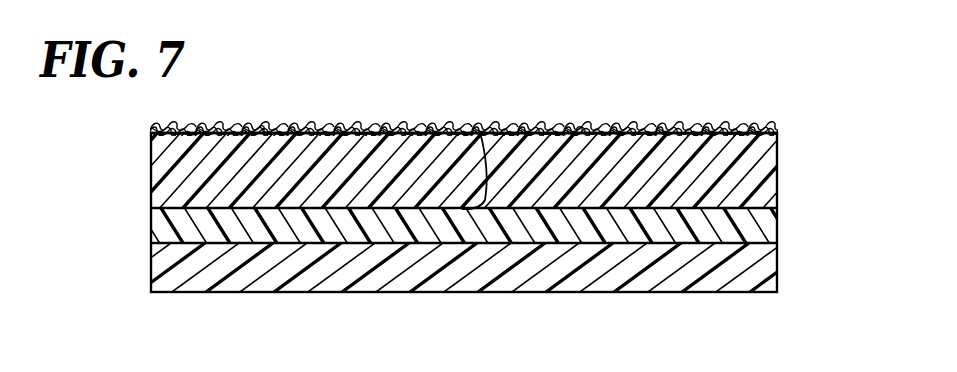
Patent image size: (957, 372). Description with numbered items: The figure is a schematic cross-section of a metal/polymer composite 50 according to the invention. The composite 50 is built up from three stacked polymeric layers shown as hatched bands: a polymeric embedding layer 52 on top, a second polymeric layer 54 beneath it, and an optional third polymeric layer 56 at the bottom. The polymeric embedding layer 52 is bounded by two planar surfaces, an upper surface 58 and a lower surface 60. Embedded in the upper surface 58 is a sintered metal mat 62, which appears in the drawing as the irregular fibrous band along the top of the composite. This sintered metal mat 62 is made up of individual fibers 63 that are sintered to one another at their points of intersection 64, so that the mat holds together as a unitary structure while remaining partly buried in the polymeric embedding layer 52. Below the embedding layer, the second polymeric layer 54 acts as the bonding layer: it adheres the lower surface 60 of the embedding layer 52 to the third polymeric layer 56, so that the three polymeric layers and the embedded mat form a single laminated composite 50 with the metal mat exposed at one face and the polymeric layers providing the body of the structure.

The metal/polymer composite 50 is at (142, 183).
The polymeric embedding layer 52 is at (750, 187).
The second polymeric layer 54 is at (165, 229).
The third polymeric layer 56 is at (690, 293).
The planar surface 58 is at (440, 115).
The planar surface 60 is at (480, 132).
The sintered metal mat 62 is at (692, 127).
The individual fibers 63 is at (263, 127).
The points of intersection 64 is at (580, 125).